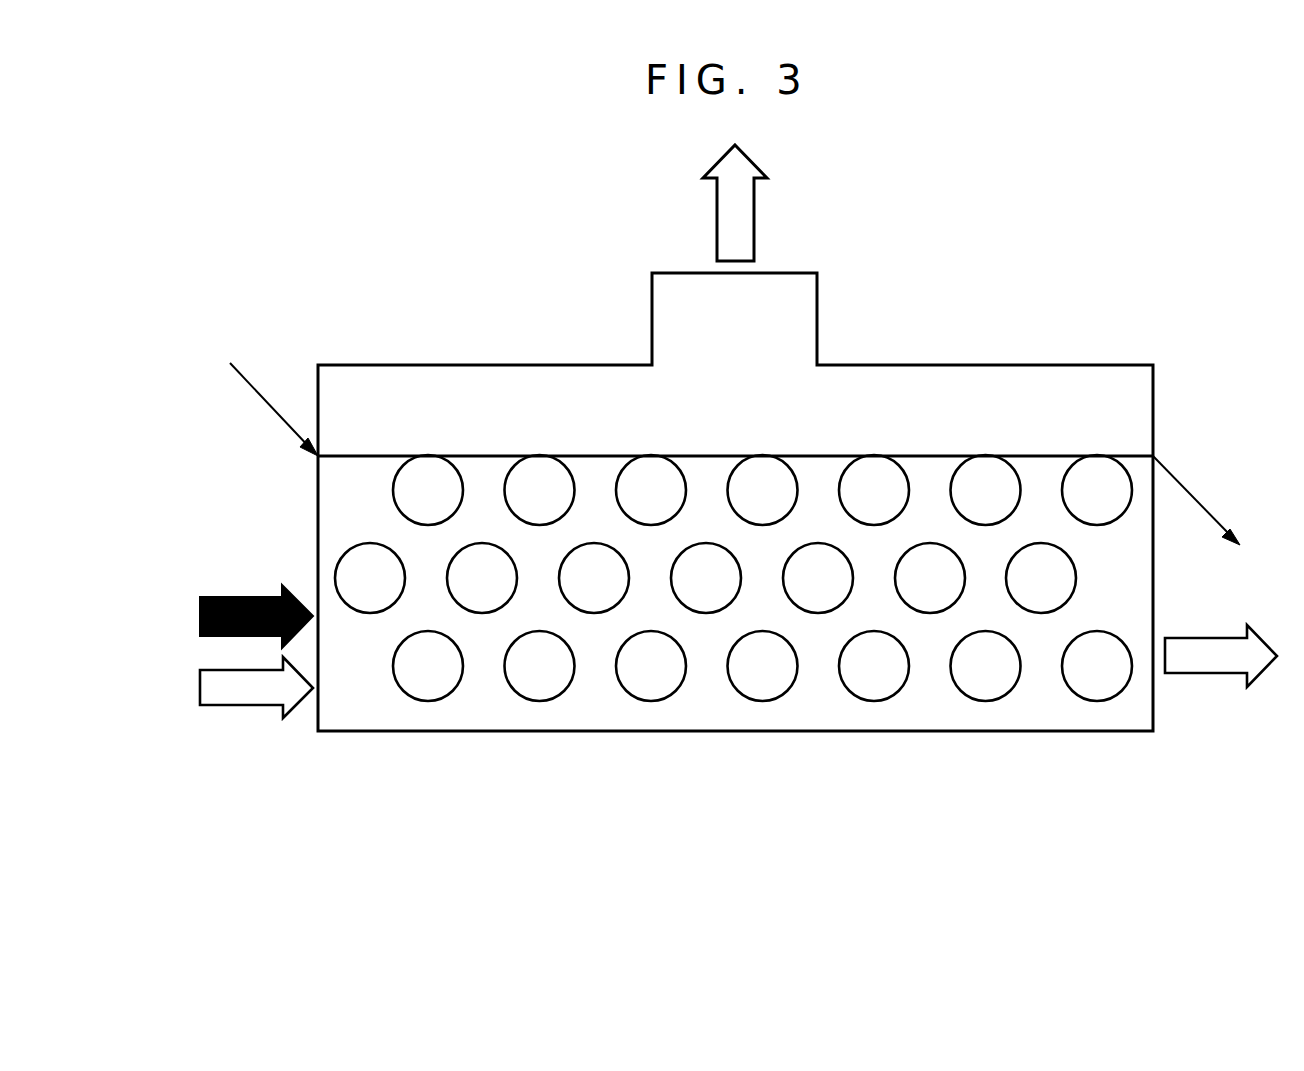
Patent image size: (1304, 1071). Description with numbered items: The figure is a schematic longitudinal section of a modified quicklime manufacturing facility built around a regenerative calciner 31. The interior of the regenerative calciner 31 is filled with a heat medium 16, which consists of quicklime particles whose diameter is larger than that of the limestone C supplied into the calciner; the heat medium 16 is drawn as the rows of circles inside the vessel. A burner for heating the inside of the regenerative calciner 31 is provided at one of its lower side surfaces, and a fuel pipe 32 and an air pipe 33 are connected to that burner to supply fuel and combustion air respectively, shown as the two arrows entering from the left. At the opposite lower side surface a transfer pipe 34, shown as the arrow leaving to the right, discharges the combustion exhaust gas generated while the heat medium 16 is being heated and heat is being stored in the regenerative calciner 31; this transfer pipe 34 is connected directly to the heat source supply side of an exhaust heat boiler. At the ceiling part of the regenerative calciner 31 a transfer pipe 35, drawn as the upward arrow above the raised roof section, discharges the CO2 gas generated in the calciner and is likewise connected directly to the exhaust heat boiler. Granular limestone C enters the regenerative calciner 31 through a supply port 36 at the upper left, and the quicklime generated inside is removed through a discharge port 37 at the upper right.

The heat medium 16 is at (873, 473).
The regenerative calciner 31 is at (1097, 370).
The fuel pipe 32 is at (231, 598).
The air pipe 33 is at (242, 706).
The transfer pipe 34 is at (1218, 664).
The transfer pipe 35 is at (780, 287).
The supply port 36 is at (314, 457).
The discharge port 37 is at (1155, 456).
The limestone C is at (592, 477).